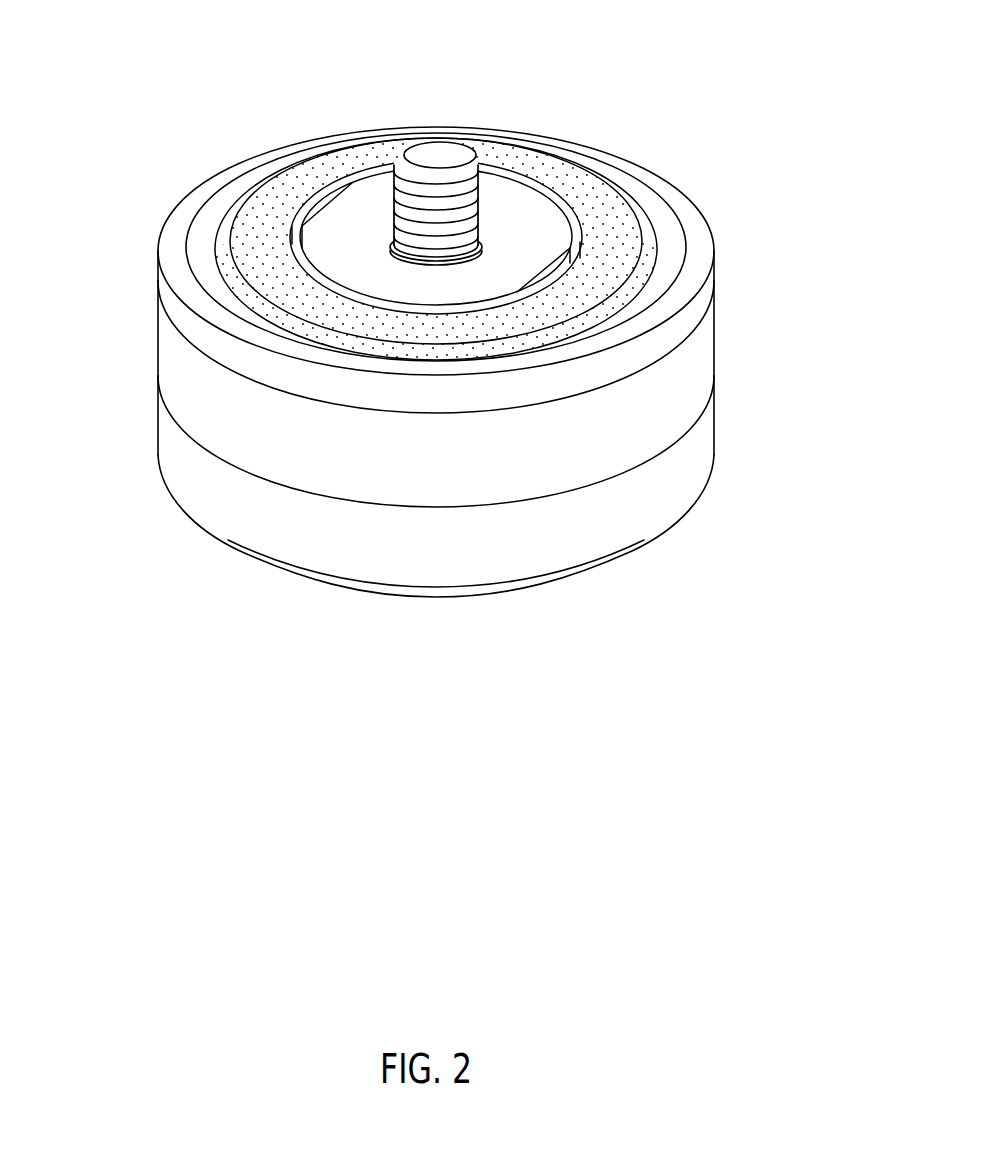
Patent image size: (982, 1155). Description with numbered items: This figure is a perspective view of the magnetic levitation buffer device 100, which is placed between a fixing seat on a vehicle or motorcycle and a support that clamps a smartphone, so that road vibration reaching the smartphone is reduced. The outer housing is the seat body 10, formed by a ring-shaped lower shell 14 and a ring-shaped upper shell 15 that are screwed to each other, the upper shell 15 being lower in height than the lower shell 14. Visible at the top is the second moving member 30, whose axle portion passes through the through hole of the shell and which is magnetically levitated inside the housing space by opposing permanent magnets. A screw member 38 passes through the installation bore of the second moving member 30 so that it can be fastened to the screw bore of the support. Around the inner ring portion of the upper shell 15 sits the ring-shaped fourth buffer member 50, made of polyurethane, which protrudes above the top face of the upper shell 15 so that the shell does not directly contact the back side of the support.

The magnetic levitation buffer device 100 is at (462, 312).
The seat body 10 is at (515, 362).
The lower shell 14 is at (822, 352).
The upper shell 15 is at (695, 358).
The second moving member 30 is at (535, 240).
The screw member 38 is at (438, 155).
The fourth buffer member 50 is at (610, 237).